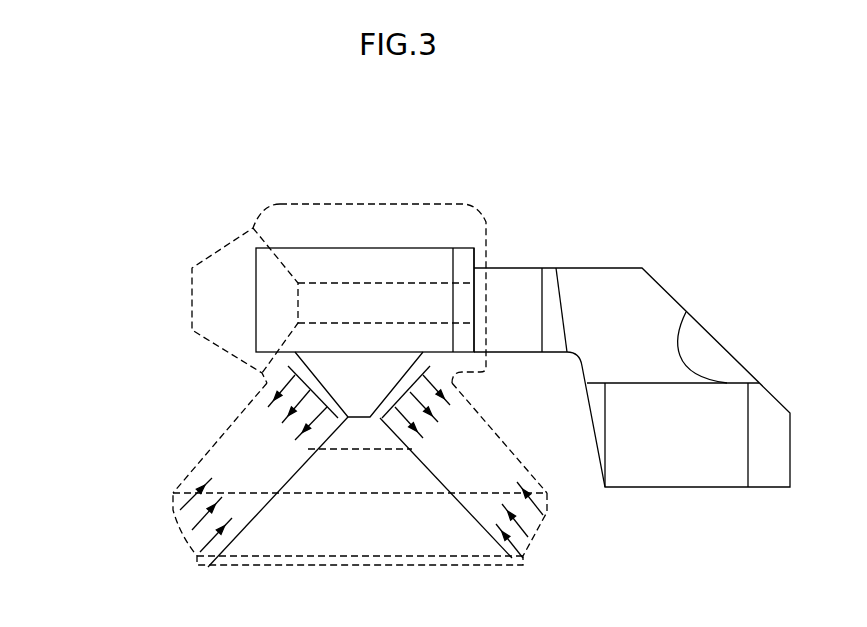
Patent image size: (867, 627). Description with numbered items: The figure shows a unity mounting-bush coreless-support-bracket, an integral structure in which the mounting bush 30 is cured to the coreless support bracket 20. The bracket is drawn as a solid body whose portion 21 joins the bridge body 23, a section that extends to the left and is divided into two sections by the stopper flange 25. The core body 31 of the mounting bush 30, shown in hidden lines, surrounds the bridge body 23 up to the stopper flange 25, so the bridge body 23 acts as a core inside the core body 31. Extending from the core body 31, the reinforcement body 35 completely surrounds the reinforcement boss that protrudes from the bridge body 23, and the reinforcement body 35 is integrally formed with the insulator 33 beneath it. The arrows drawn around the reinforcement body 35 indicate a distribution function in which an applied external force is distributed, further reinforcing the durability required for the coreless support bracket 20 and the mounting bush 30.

The coreless support bracket 20 is at (720, 285).
The upper bracket portion 21 is at (612, 320).
The bridge body 23 is at (365, 265).
The stopper flange 25 is at (460, 308).
The mounting bush 30 is at (82, 443).
The core body 31 is at (223, 290).
The insulator 33 is at (303, 540).
The reinforcement body 35 is at (257, 430).